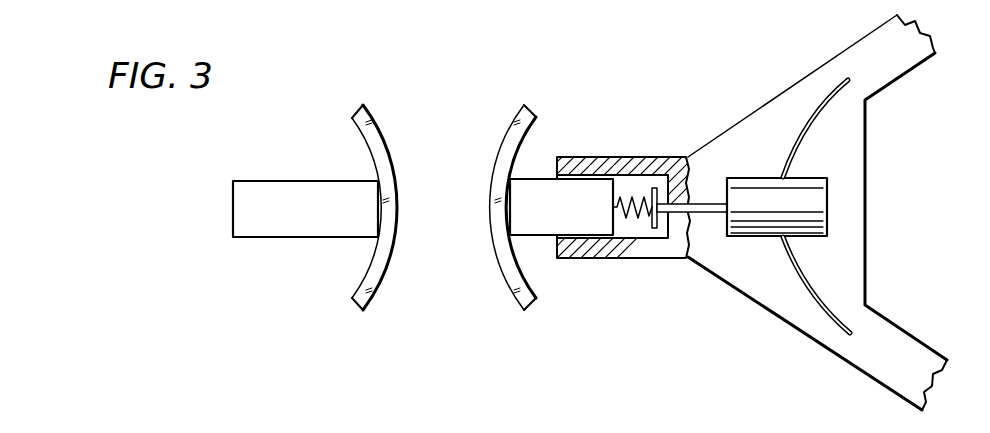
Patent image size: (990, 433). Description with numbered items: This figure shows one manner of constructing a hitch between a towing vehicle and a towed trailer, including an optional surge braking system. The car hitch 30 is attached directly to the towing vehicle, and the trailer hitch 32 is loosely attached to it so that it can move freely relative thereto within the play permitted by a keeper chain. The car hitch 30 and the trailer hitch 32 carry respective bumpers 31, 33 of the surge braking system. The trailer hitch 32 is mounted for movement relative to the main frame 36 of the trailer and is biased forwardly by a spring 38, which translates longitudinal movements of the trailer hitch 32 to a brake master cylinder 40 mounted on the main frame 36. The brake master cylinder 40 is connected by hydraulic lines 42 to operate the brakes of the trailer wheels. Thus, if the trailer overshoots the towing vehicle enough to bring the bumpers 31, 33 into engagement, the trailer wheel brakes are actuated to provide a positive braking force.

The car hitch 30 is at (262, 232).
The bumper 31 is at (360, 106).
The trailer hitch 32 is at (535, 228).
The bumper 33 is at (540, 94).
The main frame 36 is at (765, 303).
The spring 38 is at (637, 202).
The brake master cylinder 40 is at (817, 192).
The hydraulic lines 42 is at (813, 125).